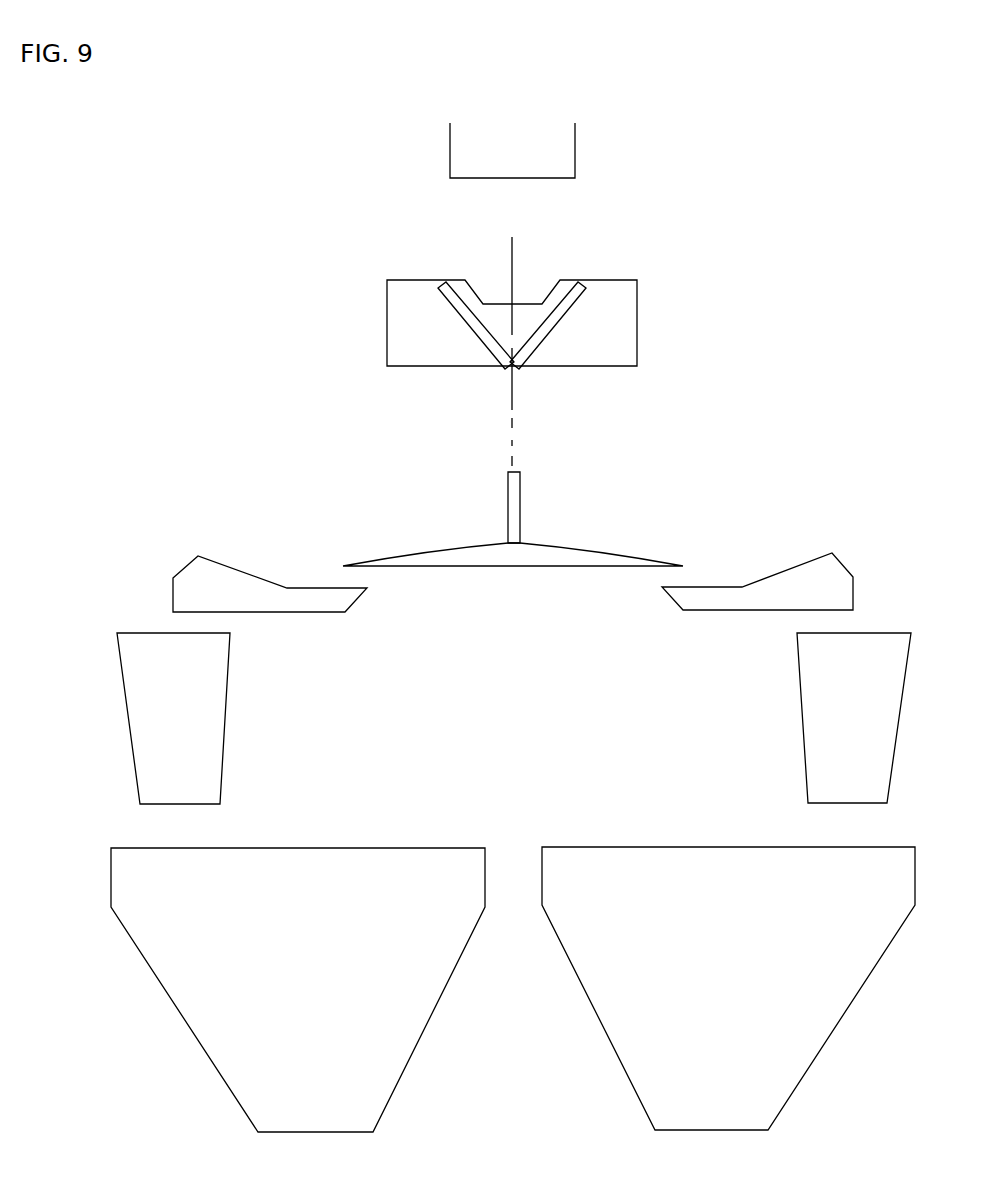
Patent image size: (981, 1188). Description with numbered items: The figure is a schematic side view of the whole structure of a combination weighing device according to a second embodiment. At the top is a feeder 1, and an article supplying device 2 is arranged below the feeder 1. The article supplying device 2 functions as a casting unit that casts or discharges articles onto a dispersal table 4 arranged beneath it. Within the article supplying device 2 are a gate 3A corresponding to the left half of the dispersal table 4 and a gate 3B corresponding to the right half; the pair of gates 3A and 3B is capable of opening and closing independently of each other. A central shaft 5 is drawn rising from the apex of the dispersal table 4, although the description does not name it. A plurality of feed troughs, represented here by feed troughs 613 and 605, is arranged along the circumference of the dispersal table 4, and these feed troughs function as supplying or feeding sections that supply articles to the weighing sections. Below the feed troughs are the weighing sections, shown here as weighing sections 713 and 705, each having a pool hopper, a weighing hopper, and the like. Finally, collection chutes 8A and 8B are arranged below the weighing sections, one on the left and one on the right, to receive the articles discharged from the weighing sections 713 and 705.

The feeder 1 is at (575, 160).
The article supplying device 2 is at (623, 303).
The gate 3A is at (470, 327).
The gate 3B is at (545, 327).
The dispersal table 4 is at (553, 555).
The center shaft 5 is at (507, 518).
The feed trough 613 is at (247, 588).
The feed trough 605 is at (792, 588).
The weighing section 713 is at (202, 702).
The weighing section 705 is at (825, 679).
The collection chute 8A is at (338, 862).
The collection chute 8B is at (667, 872).